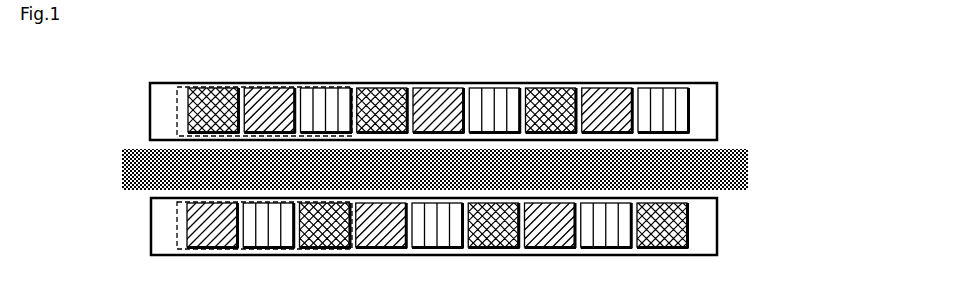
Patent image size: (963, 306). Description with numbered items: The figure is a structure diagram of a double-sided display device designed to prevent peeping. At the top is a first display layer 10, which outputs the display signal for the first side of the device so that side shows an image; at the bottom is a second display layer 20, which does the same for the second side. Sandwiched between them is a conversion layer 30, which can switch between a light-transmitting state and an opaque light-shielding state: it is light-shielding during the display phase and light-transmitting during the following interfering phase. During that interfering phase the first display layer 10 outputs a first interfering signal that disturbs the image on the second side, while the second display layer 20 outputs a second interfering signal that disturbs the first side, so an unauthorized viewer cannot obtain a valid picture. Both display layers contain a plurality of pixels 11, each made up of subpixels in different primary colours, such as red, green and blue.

The first display layer 10 is at (440, 98).
The pixels 11 is at (177, 113).
The second display layer 20 is at (706, 224).
The conversion layer 30 is at (708, 171).